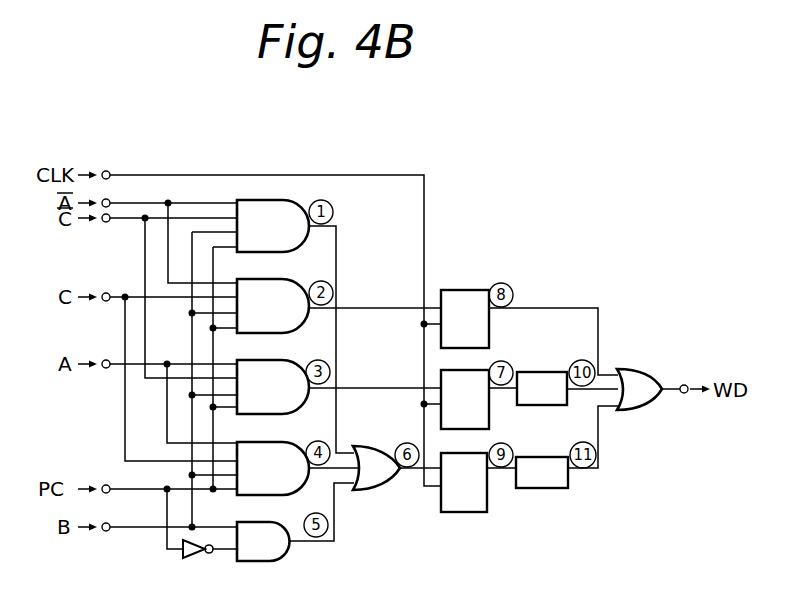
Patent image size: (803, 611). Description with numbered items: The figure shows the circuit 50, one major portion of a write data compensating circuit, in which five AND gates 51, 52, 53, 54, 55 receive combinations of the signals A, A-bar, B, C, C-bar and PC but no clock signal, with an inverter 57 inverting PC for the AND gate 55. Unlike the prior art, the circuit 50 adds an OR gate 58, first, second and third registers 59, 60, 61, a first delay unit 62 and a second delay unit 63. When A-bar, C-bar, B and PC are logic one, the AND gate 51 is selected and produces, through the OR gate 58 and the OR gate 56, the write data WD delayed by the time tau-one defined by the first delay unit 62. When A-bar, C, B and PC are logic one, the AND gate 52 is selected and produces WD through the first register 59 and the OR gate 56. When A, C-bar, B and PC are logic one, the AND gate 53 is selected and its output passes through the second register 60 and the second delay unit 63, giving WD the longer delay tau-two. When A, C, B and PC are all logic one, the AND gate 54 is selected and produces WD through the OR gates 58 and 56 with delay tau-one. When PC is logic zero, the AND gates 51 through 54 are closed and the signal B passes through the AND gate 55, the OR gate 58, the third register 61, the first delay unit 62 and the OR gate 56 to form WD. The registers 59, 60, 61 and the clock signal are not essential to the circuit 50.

The circuit 50 is at (329, 126).
The AND gate 51 is at (250, 200).
The AND gate 52 is at (289, 278).
The AND gate 53 is at (289, 359).
The AND gate 54 is at (290, 440).
The AND gate 55 is at (280, 520).
The OR gate 56 is at (635, 368).
The inverter 57 is at (197, 560).
The OR gate 58 is at (374, 445).
The first register 59 is at (466, 290).
The second register 60 is at (440, 370).
The third register 61 is at (460, 513).
The first delay unit 62 is at (541, 457).
The second delay unit 63 is at (543, 372).